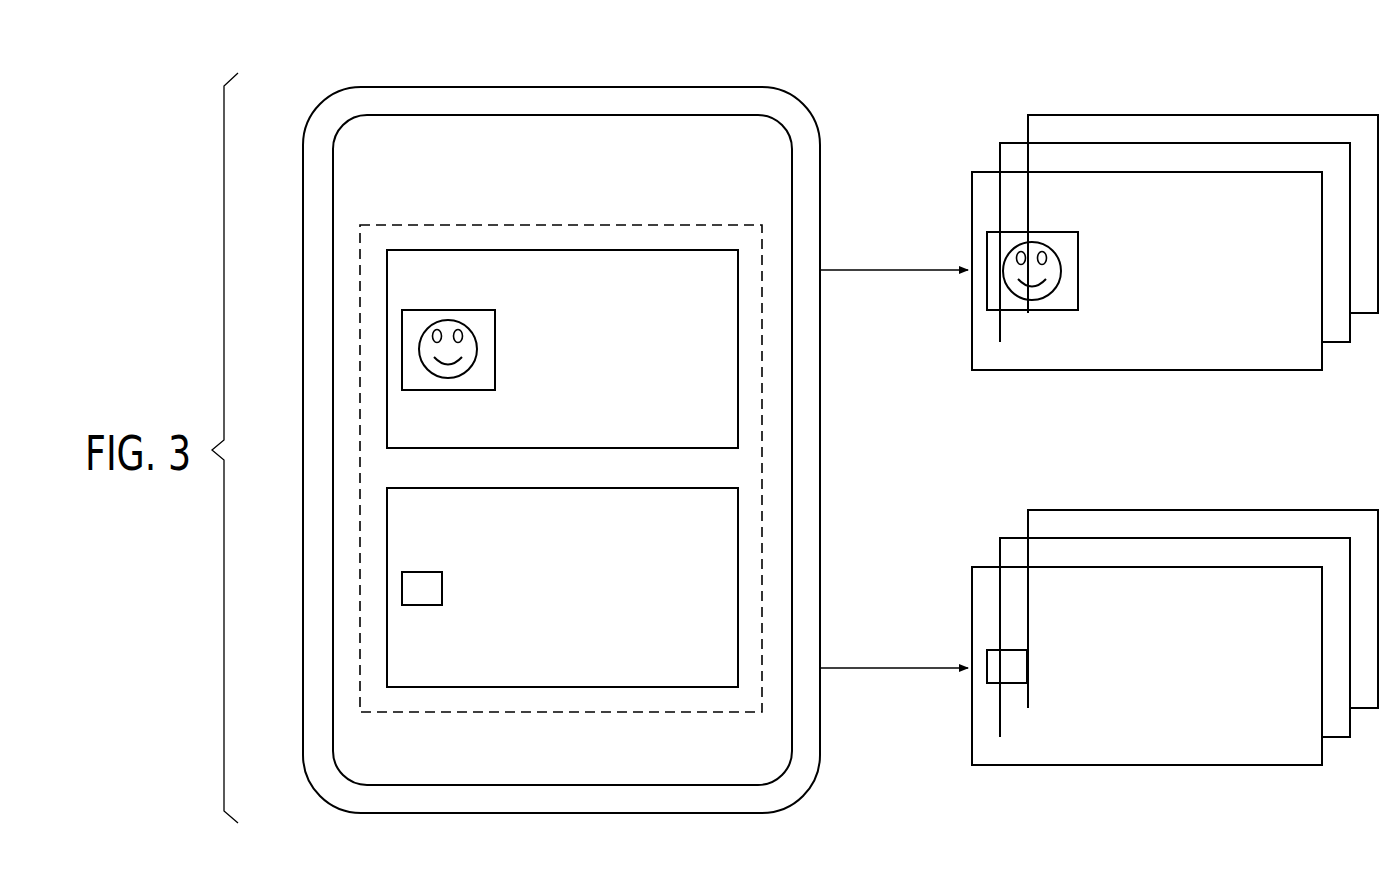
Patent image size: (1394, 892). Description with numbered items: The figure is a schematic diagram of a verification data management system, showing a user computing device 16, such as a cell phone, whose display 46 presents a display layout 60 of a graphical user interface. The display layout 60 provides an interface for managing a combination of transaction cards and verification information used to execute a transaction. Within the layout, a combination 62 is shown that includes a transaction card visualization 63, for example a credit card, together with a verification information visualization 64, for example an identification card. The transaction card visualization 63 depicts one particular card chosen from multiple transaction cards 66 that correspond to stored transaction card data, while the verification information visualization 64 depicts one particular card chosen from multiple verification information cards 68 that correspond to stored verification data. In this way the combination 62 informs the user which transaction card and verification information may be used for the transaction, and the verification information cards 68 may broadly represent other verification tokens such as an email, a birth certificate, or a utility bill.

The user computing device 16 is at (465, 87).
The display 46 is at (345, 127).
The display layout 60 is at (697, 135).
The combination 62 is at (563, 224).
The transaction card visualization 63 is at (648, 487).
The verification information visualization 64 is at (650, 449).
The transaction cards 66 is at (988, 538).
The verification information cards 68 is at (988, 143).